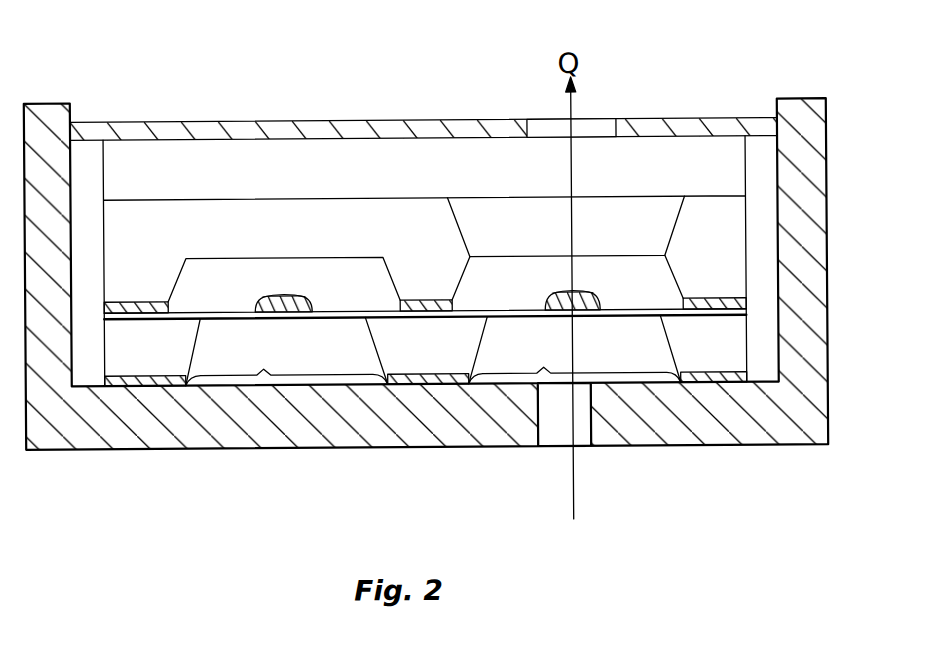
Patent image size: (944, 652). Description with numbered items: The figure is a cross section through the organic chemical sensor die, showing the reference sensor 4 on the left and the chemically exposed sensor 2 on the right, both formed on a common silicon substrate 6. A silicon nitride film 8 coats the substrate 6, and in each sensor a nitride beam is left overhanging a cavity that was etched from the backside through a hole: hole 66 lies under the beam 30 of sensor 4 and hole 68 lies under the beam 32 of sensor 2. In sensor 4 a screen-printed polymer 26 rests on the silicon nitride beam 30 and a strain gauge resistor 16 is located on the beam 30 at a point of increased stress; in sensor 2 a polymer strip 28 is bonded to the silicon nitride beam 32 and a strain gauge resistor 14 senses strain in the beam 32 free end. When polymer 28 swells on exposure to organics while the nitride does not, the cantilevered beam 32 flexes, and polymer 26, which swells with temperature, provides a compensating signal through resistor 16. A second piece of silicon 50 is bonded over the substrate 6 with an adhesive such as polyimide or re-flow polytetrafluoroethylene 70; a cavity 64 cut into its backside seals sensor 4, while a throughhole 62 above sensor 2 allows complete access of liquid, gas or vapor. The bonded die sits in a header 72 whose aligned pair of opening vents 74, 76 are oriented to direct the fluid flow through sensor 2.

The sensor 2 is at (750, 55).
The sensor 4 is at (462, 80).
The silicon substrate 6 is at (726, 359).
The silicon nitride film 8 is at (126, 318).
The strain gauge resistor 14 is at (598, 299).
The strain gauge resistor 16 is at (312, 302).
The polymer strip 26 is at (273, 296).
The polymer strip 28 is at (548, 298).
The silicon nitride beam 30 is at (278, 319).
The silicon nitride beam 32 is at (553, 316).
The second piece of silicon 50 is at (703, 197).
The throughhole 62 is at (663, 298).
The cavity 64 is at (232, 293).
The hole 66 is at (286, 351).
The hole 68 is at (574, 349).
The polytetrafluoroethylene adhesive 70 is at (128, 300).
The header 72 is at (828, 370).
The opening vent 74 is at (547, 447).
The opening vent 76 is at (542, 128).